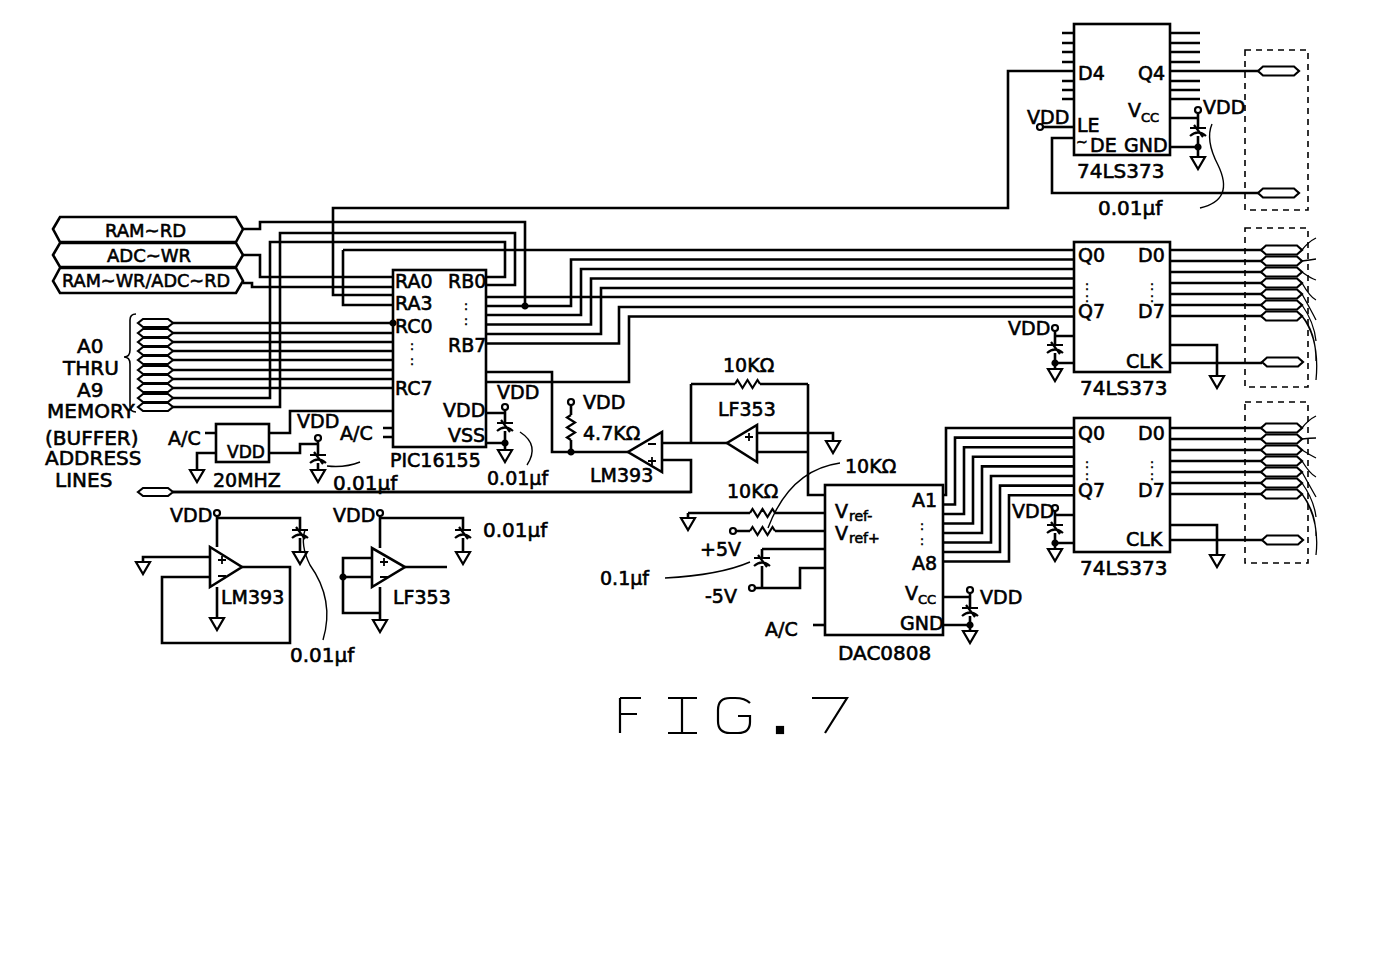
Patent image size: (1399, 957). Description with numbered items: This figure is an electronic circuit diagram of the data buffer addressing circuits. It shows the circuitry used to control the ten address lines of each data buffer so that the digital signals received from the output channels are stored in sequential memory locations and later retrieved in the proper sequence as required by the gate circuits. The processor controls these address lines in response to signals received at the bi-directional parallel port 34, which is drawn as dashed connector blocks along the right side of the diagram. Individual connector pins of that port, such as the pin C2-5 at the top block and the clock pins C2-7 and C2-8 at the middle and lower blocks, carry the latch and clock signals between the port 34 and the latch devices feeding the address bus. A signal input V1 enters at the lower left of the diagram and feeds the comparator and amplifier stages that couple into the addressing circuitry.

The bi-directional parallel port 34 is at (1280, 134).
The V1 input signal V1 is at (155, 497).
The connector pin C2-5 is at (1208, 171).
The connector pin C2-7 is at (1282, 365).
The connector pin C2-8 is at (1283, 548).